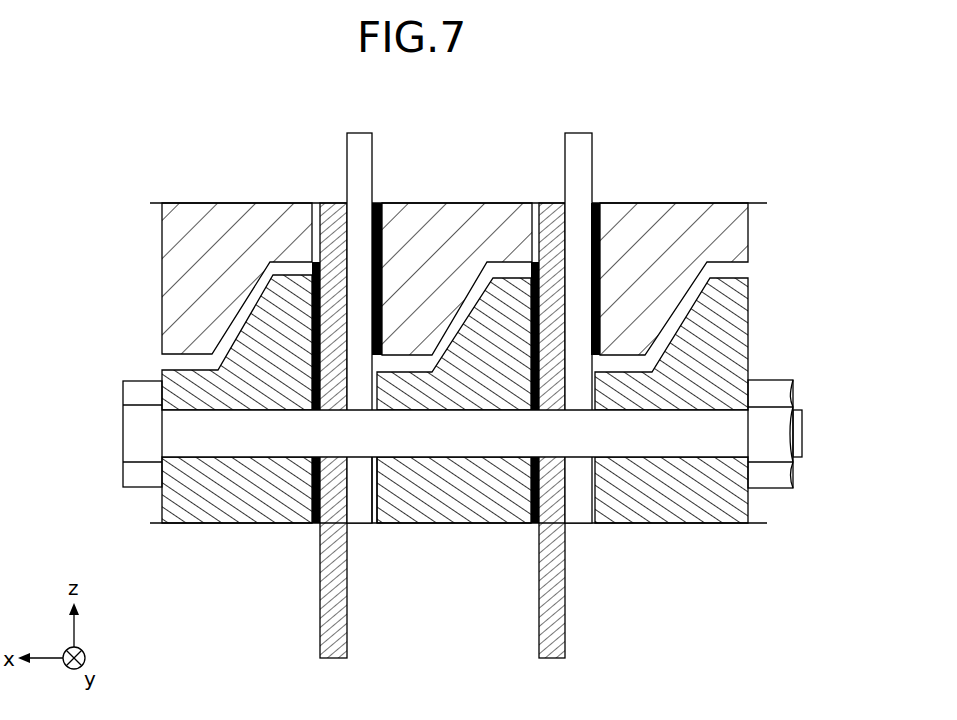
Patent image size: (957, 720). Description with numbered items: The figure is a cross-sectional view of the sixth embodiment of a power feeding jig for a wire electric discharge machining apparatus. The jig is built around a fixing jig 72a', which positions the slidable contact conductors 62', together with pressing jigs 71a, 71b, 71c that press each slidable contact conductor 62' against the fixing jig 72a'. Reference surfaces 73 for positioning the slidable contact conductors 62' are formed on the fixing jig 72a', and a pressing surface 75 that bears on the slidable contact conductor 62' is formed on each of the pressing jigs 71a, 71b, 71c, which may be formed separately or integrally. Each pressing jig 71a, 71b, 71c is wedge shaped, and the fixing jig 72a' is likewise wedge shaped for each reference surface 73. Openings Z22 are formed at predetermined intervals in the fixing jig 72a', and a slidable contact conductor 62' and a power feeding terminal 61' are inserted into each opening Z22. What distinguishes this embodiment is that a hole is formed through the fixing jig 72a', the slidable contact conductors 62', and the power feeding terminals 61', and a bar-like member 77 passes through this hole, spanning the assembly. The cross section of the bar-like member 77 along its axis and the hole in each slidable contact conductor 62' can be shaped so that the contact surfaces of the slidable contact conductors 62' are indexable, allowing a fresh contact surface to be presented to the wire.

The power feeding terminal 61' is at (363, 300).
The slidable contact conductor 62' is at (333, 457).
The pressing jig 71a is at (227, 223).
The pressing jig 71b is at (477, 223).
The pressing jig 71c is at (697, 223).
The fixing jig 72a' is at (237, 436).
The reference surface 73 is at (310, 485).
The pressing surface 75 is at (380, 238).
The bar-like member 77 is at (133, 436).
The opening Z22 is at (372, 498).